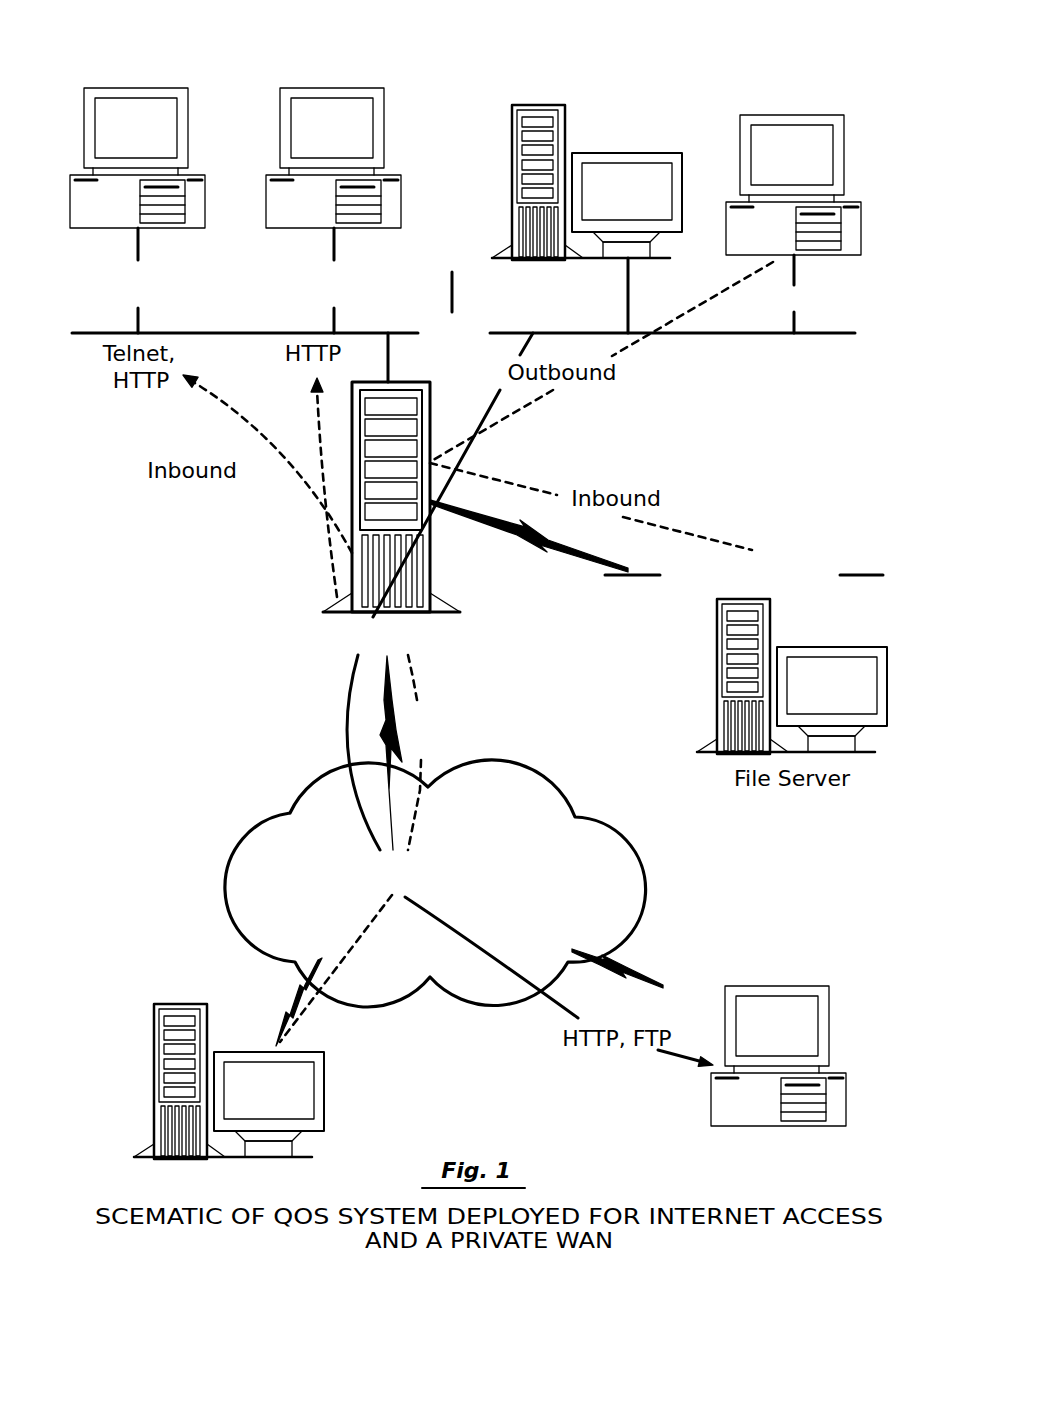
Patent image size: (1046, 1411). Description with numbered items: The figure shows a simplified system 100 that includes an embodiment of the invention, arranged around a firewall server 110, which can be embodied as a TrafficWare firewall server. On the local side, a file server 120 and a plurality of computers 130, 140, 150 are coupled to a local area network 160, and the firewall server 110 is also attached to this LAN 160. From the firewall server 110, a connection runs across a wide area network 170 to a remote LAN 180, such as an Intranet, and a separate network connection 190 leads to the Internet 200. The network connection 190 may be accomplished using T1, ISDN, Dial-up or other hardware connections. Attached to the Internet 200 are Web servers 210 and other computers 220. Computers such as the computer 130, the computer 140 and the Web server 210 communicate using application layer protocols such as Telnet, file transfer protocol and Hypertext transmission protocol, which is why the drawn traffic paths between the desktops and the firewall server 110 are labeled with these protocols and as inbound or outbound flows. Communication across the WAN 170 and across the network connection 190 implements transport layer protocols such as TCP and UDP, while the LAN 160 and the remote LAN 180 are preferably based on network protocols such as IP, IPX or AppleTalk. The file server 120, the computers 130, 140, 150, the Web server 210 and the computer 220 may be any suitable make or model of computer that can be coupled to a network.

The system 100 is at (686, 96).
The firewall server 110 is at (327, 605).
The file server 120 is at (565, 120).
The computer 130 is at (190, 117).
The computer 140 is at (380, 110).
The computer 150 is at (798, 117).
The local area network (LAN) 160 is at (842, 335).
The wide area network (WAN) 170 is at (530, 590).
The remote LAN 180 is at (855, 575).
The network connection 190 is at (556, 757).
The Internet 200 is at (645, 893).
The Web server 210 is at (325, 1105).
The computer 220 is at (780, 990).